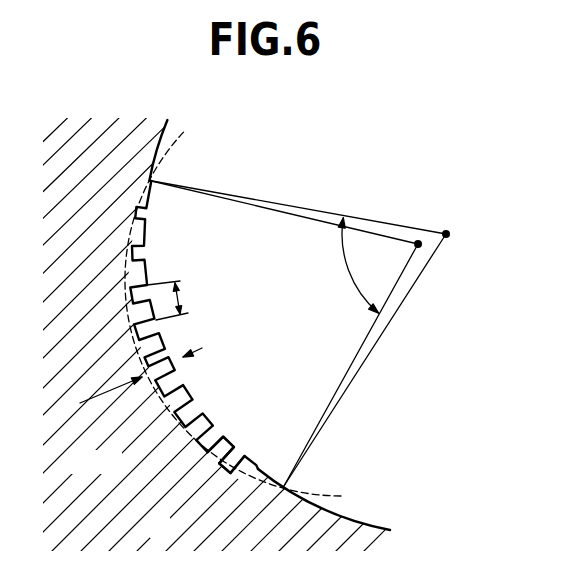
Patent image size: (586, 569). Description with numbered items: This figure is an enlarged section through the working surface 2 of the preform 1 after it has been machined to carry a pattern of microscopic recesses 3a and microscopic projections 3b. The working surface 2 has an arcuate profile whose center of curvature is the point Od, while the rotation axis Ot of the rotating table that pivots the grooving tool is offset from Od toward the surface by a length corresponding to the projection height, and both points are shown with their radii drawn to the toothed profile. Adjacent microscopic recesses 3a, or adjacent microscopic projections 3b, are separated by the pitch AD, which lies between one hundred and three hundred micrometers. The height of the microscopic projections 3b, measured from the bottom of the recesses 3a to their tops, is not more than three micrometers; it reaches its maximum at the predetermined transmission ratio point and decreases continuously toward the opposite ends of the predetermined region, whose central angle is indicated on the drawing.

The preform 1 is at (221, 335).
The working surface 2 is at (355, 518).
The microscopic recesses 3a is at (223, 449).
The microscopic projections 3b is at (216, 436).
The rotation axis of rotating table Ot is at (417, 232).
The center of curvature of the arcuate profile of working surface Od is at (447, 232).
The pitch AD is at (178, 295).